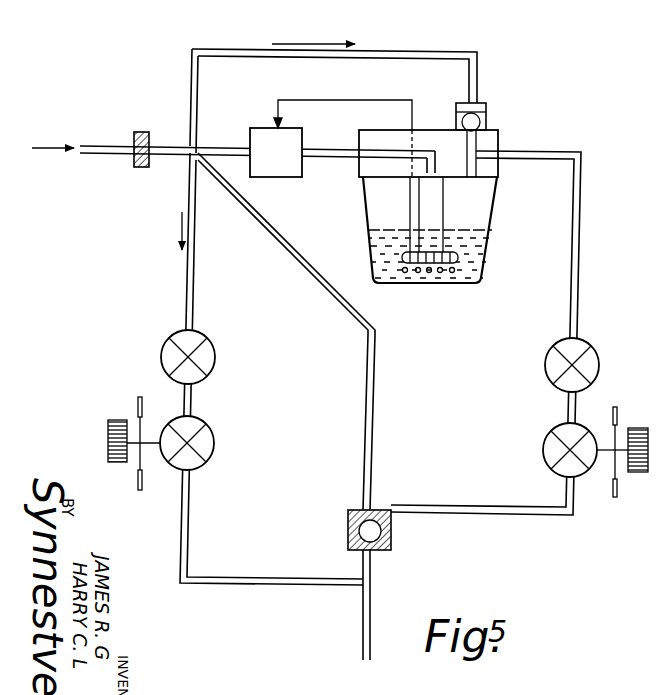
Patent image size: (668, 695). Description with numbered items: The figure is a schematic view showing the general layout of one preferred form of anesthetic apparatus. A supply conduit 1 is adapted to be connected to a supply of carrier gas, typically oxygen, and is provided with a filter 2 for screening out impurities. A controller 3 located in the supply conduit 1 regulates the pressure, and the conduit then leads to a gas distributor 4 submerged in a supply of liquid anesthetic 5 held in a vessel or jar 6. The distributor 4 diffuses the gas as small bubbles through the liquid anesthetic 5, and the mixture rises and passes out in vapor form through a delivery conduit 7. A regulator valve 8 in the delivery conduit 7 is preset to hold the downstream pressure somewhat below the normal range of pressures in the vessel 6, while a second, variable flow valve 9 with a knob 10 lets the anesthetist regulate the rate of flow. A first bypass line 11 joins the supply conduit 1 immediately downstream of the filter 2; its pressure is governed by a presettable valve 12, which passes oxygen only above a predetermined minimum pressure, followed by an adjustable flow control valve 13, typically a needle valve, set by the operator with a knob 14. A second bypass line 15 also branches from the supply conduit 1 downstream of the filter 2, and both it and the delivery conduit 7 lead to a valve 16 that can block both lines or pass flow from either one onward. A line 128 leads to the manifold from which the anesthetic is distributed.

The supply conduit 1 is at (107, 146).
The filter 2 is at (139, 167).
The controller 3 is at (268, 128).
The gas distributor 4 is at (396, 264).
The liquid anesthetic 5 is at (477, 252).
The vessel 6 is at (492, 194).
The delivery conduit 7 is at (543, 151).
The regulator valve 8 is at (587, 340).
The second valve 9 is at (550, 427).
The knob 10 is at (645, 472).
The first bypass line 11 is at (193, 288).
The presettable valve 12 is at (167, 342).
The adjustable flow control valve 13 is at (215, 420).
The knob 14 is at (120, 465).
The second bypass line 15 is at (332, 298).
The valve 16 is at (379, 505).
The line 128 is at (373, 566).